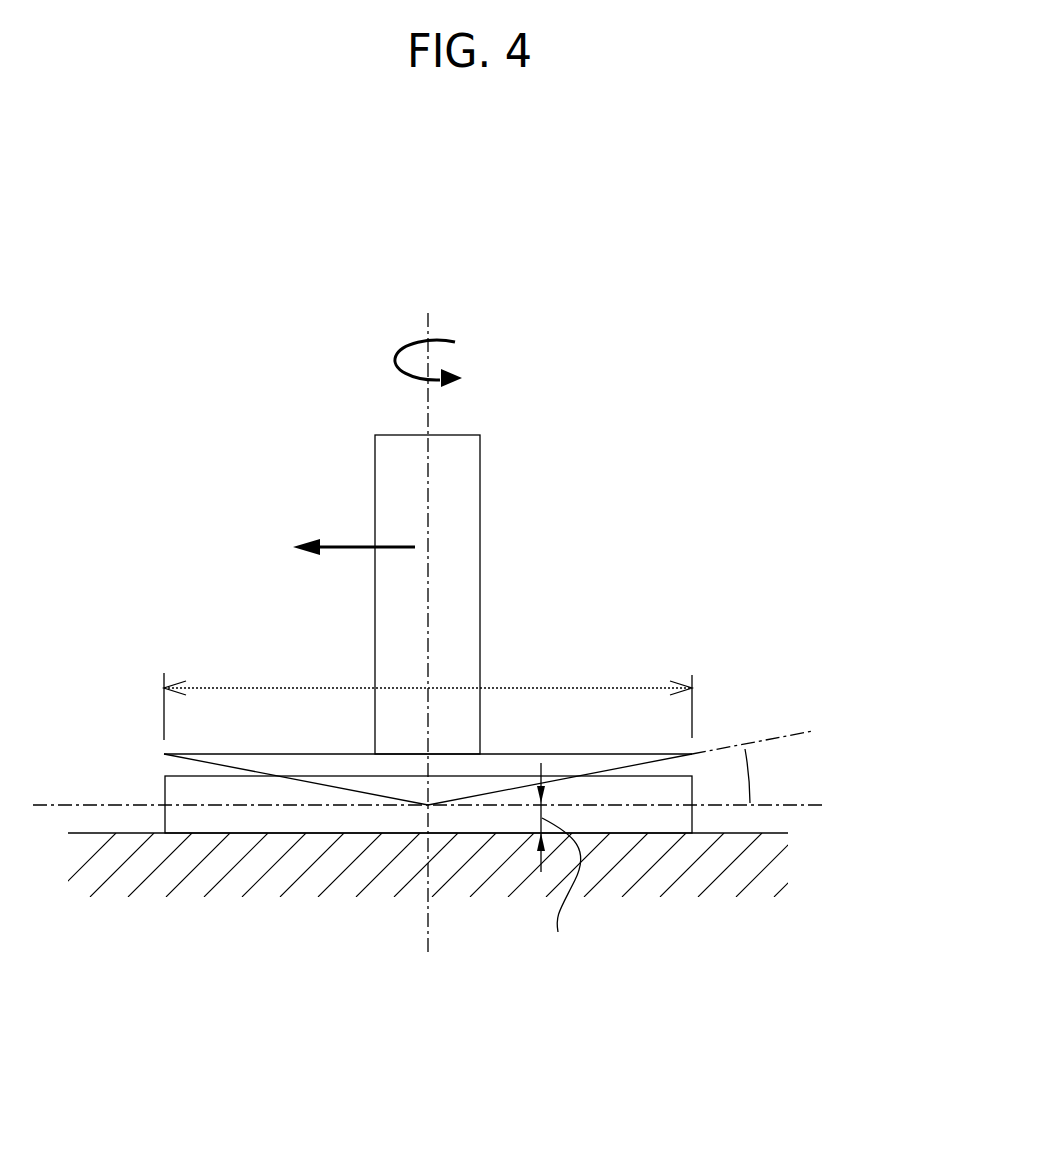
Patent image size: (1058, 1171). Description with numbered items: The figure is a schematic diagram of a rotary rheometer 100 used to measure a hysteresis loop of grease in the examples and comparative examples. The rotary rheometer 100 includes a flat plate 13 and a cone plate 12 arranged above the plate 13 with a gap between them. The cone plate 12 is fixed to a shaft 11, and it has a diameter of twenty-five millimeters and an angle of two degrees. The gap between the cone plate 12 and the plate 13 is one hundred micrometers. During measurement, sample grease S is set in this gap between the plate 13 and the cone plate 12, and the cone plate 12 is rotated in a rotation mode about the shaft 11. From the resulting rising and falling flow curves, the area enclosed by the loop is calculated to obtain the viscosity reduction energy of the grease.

The rotary rheometer 100 is at (475, 621).
The shaft 11 is at (465, 517).
The cone plate 12 is at (592, 762).
The plate 13 is at (717, 870).
The sample grease S is at (177, 790).